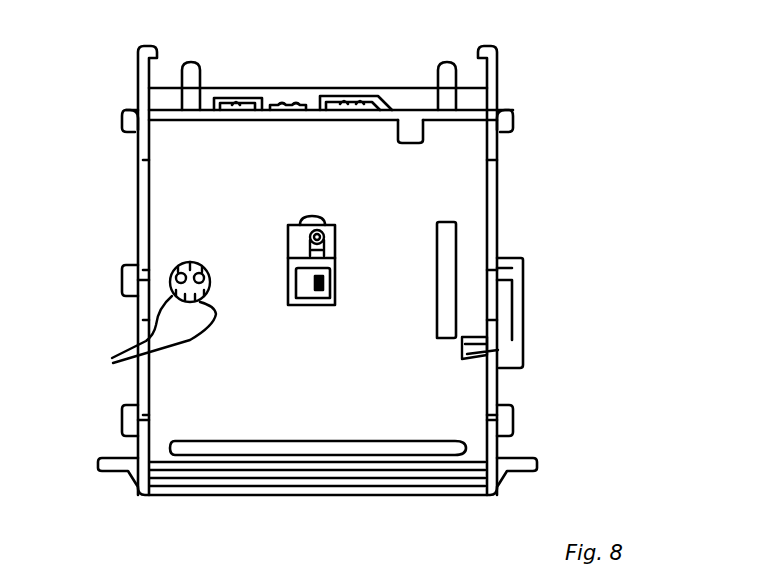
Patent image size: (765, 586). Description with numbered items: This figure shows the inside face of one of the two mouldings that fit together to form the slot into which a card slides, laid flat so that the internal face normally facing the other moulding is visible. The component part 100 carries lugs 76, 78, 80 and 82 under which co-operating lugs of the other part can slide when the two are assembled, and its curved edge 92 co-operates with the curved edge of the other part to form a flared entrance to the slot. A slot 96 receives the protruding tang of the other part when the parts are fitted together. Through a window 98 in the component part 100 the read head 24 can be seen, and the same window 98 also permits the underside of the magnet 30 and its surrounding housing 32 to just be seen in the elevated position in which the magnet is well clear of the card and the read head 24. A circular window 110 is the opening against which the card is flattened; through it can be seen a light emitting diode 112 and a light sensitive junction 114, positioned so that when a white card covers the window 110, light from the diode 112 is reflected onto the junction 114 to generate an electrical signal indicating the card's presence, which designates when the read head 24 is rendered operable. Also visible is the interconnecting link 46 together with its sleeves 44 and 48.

The read head 24 is at (310, 298).
The magnet 30 is at (317, 229).
The housing 32 is at (292, 232).
The sleeve 44 is at (500, 253).
The interconnecting link 46 is at (520, 314).
The sleeve 48 is at (472, 362).
The lug 76 is at (122, 426).
The lug 78 is at (514, 428).
The lug 80 is at (124, 128).
The lug 82 is at (512, 128).
The curved edge 92 is at (392, 490).
The slot 96 is at (313, 110).
The window 98 is at (332, 240).
The component part 100 is at (499, 202).
The circular window 110 is at (186, 262).
The light emitting diode 112 is at (165, 330).
The light sensitive junction 114 is at (150, 327).